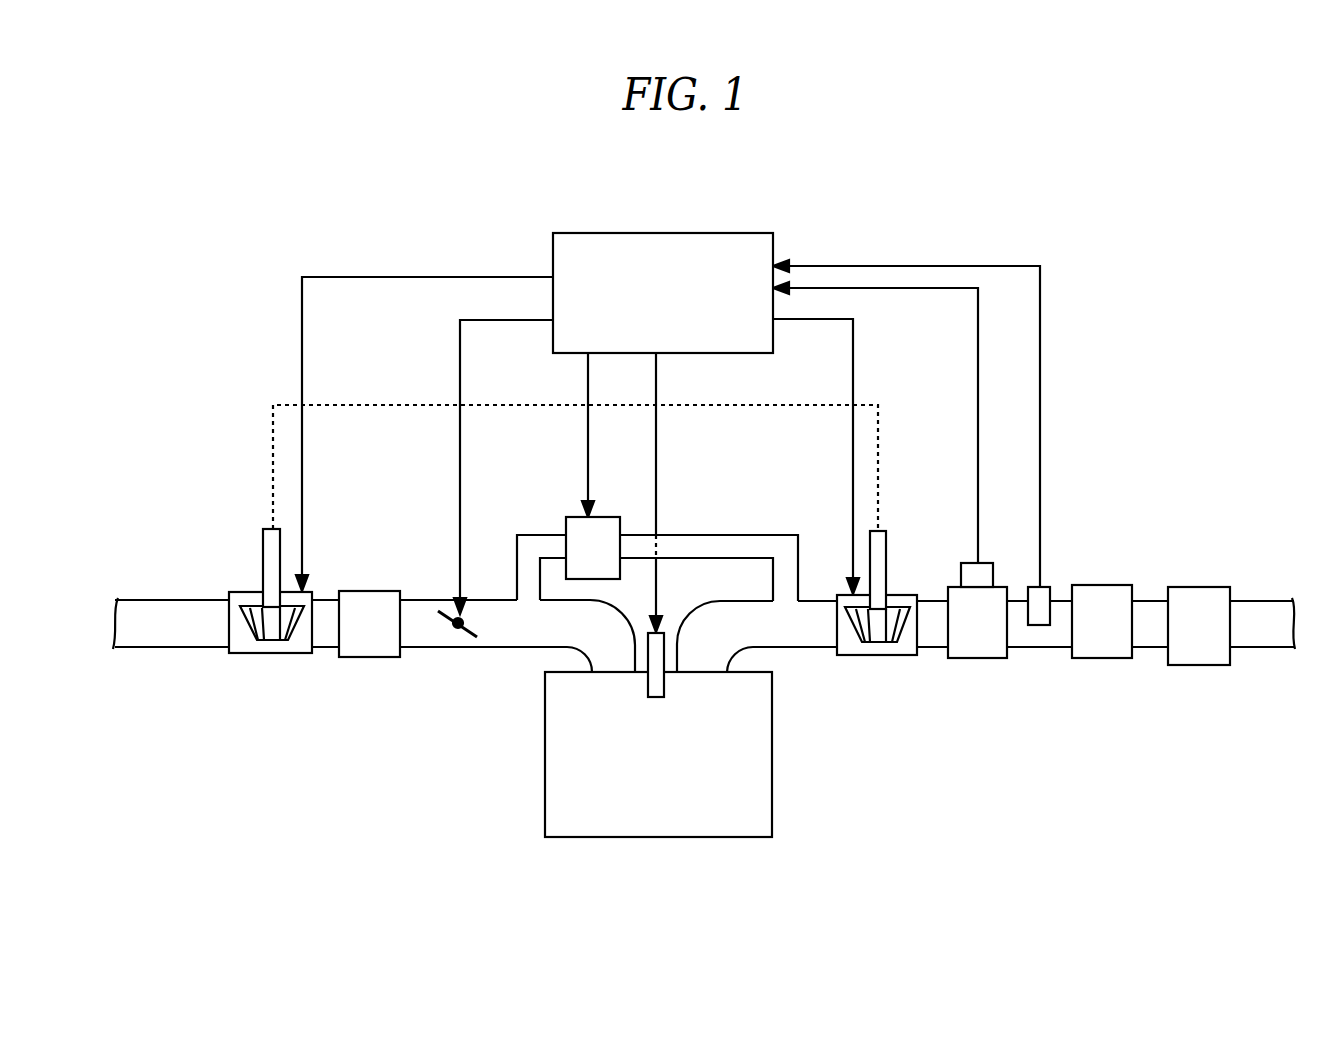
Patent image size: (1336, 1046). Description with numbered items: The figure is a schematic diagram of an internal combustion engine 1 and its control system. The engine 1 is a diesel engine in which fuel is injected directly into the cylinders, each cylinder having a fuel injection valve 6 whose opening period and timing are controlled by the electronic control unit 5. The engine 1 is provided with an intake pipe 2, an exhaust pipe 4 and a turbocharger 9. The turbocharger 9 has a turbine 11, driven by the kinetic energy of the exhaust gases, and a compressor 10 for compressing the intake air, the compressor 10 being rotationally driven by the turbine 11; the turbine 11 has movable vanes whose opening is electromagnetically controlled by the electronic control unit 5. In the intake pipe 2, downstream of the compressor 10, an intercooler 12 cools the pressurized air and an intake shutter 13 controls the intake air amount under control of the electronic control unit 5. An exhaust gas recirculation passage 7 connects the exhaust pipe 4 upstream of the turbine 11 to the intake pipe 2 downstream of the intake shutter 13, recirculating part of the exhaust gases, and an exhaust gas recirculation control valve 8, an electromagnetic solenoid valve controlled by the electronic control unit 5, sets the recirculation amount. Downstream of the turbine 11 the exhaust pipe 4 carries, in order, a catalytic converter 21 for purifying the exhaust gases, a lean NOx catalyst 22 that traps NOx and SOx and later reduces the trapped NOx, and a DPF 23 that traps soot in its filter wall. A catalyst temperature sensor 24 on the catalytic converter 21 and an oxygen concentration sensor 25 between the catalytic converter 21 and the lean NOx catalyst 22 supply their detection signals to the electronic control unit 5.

The internal combustion engine 1 is at (645, 838).
The intake pipe 2 is at (432, 597).
The exhaust pipe 4 is at (790, 647).
The electronic control unit 5 is at (610, 233).
The fuel injection valve 6 is at (663, 632).
The exhaust gas recirculation passage 7 is at (722, 535).
The exhaust gas recirculation control valve 8 is at (615, 515).
The turbocharger 9 is at (250, 547).
The compressor 10 is at (276, 653).
The turbine 11 is at (872, 655).
The intercooler 12 is at (372, 591).
The intake shutter 13 is at (458, 630).
The catalytic converter 21 is at (977, 658).
The lean NOx catalyst 22 is at (1113, 585).
The DPF 23 is at (1203, 587).
The catalyst temperature sensor 24 is at (982, 563).
The oxygen concentration sensor 25 is at (1043, 587).